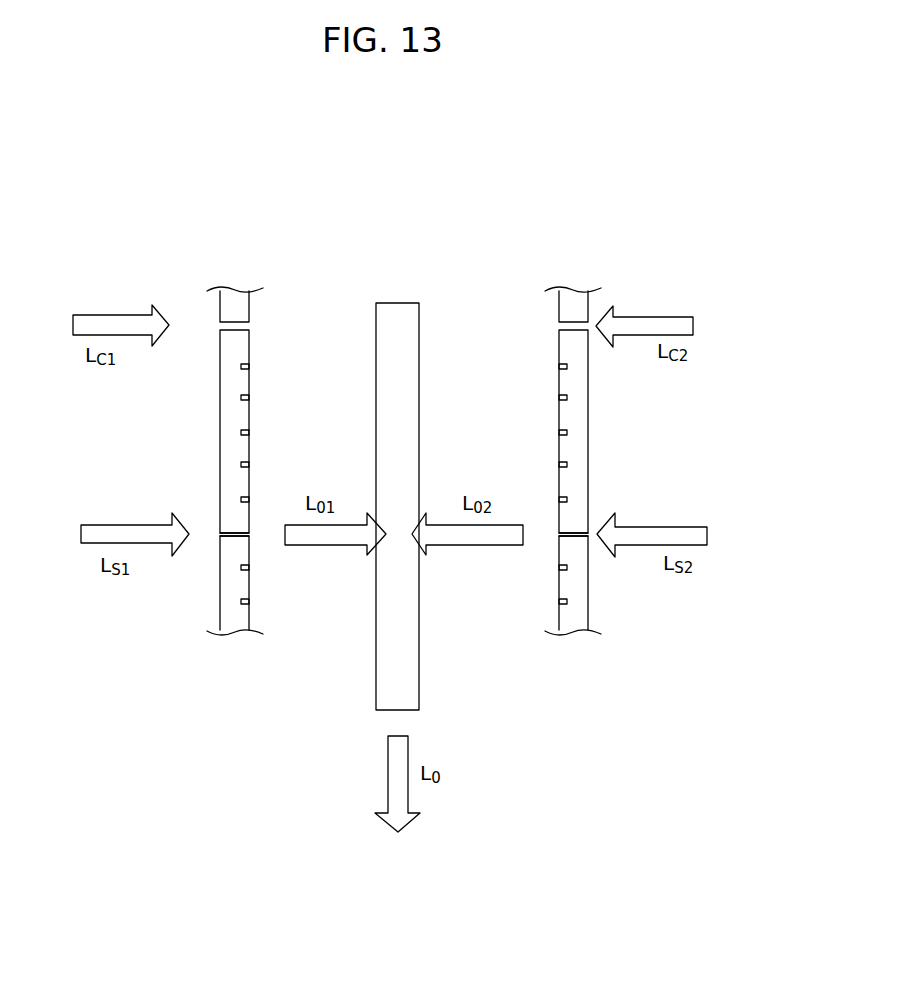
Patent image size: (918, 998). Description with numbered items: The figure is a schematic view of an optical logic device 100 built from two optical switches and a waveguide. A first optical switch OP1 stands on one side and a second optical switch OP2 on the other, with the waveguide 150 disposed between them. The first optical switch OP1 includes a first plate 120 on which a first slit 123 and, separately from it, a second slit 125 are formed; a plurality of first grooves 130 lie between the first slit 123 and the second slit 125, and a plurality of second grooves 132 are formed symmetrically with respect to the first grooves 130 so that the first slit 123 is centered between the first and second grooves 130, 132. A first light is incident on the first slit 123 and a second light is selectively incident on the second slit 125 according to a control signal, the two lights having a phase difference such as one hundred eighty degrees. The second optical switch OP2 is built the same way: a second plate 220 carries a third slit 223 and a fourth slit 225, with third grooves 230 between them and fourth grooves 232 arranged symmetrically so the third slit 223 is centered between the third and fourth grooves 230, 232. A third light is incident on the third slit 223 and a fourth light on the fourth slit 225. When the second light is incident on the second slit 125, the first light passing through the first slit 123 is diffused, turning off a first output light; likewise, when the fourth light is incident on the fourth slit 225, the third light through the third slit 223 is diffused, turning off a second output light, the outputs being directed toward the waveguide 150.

The optical logic device 100 is at (312, 214).
The first optical switch OP1 is at (146, 268).
The second optical switch OP2 is at (650, 268).
The first plate 120 is at (233, 298).
The second slit 125 is at (252, 328).
The first grooves 130 is at (250, 433).
The first slit 123 is at (250, 534).
The second grooves 132 is at (250, 602).
The waveguide 150 is at (397, 310).
The second plate 220 is at (570, 298).
The fourth slit 225 is at (558, 326).
The third grooves 230 is at (558, 399).
The third slit 223 is at (558, 534).
The fourth grooves 232 is at (558, 602).